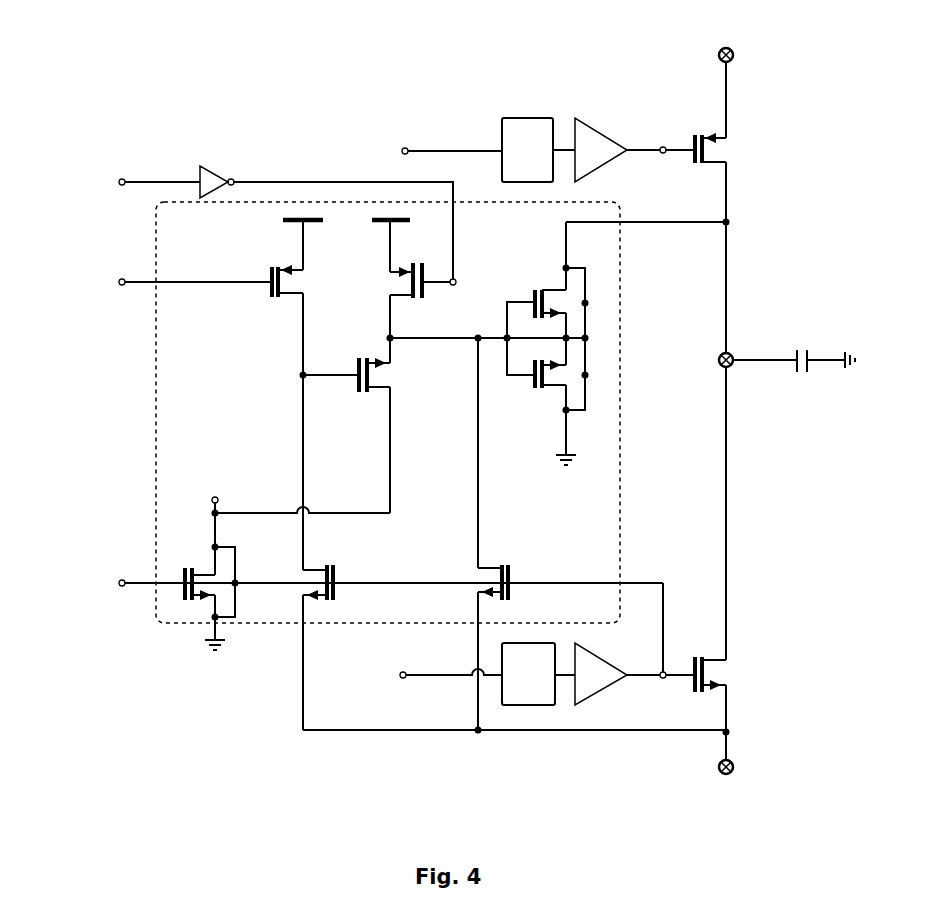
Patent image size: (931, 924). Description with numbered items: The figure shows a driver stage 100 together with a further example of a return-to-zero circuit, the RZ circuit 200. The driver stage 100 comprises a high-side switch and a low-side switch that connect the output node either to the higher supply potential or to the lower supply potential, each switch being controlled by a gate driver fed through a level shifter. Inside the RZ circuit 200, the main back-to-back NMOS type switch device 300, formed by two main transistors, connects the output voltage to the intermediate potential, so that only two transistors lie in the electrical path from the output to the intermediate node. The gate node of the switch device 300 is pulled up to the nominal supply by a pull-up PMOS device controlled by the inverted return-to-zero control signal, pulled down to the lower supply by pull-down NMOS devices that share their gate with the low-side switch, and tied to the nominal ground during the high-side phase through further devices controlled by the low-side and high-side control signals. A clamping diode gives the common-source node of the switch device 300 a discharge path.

The driver stage 100 is at (212, 83).
The RZ circuit 200 is at (155, 363).
The main back-to-back NMOS type switch device 300 is at (590, 326).